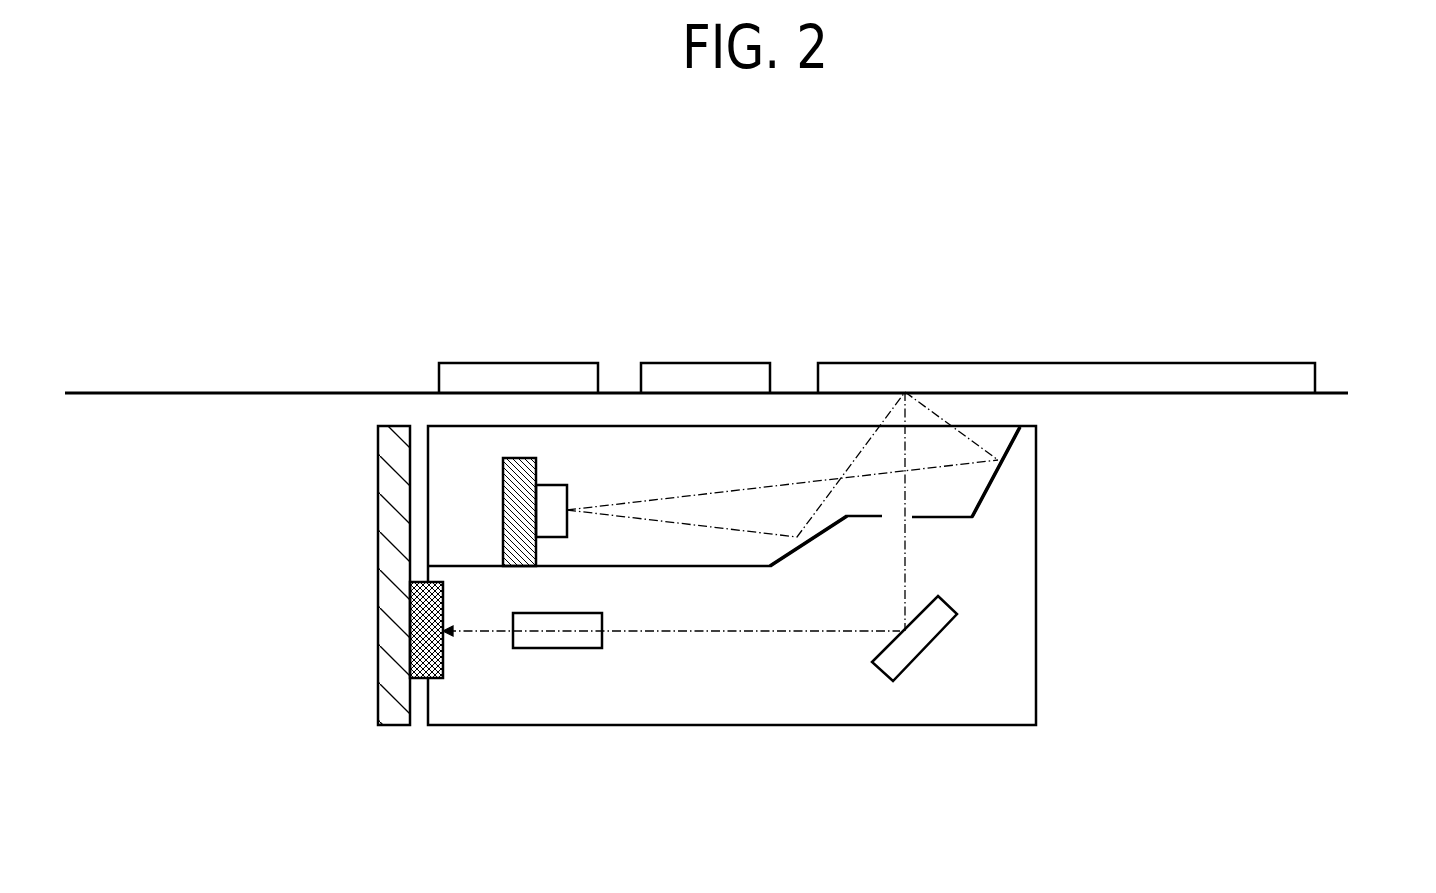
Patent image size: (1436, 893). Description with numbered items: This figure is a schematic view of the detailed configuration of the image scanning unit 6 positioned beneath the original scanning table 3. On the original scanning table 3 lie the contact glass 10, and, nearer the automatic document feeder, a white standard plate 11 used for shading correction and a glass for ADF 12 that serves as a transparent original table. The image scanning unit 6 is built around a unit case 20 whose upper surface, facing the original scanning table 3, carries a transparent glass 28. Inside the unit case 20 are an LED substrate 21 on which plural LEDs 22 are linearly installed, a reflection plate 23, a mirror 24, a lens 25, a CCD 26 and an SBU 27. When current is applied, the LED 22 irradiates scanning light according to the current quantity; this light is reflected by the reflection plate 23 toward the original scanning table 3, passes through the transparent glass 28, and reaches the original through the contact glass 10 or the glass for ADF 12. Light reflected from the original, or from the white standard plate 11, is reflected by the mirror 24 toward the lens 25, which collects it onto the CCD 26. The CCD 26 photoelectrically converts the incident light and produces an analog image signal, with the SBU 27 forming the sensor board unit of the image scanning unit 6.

The original scanning table 3 is at (1345, 373).
The contact glass 10 is at (1065, 362).
The white standard plate 11 is at (709, 362).
The glass for ADF 12 is at (522, 362).
The unit case 20 is at (955, 727).
The image scanning unit 6 is at (705, 735).
The LED substrate 21 is at (500, 492).
The LED 22 is at (575, 490).
The reflection plate 23 is at (790, 556).
The mirror 24 is at (945, 600).
The lens 25 is at (575, 650).
The CCD 26 is at (445, 660).
The SBU 27 is at (375, 493).
The transparent glass 28 is at (993, 427).